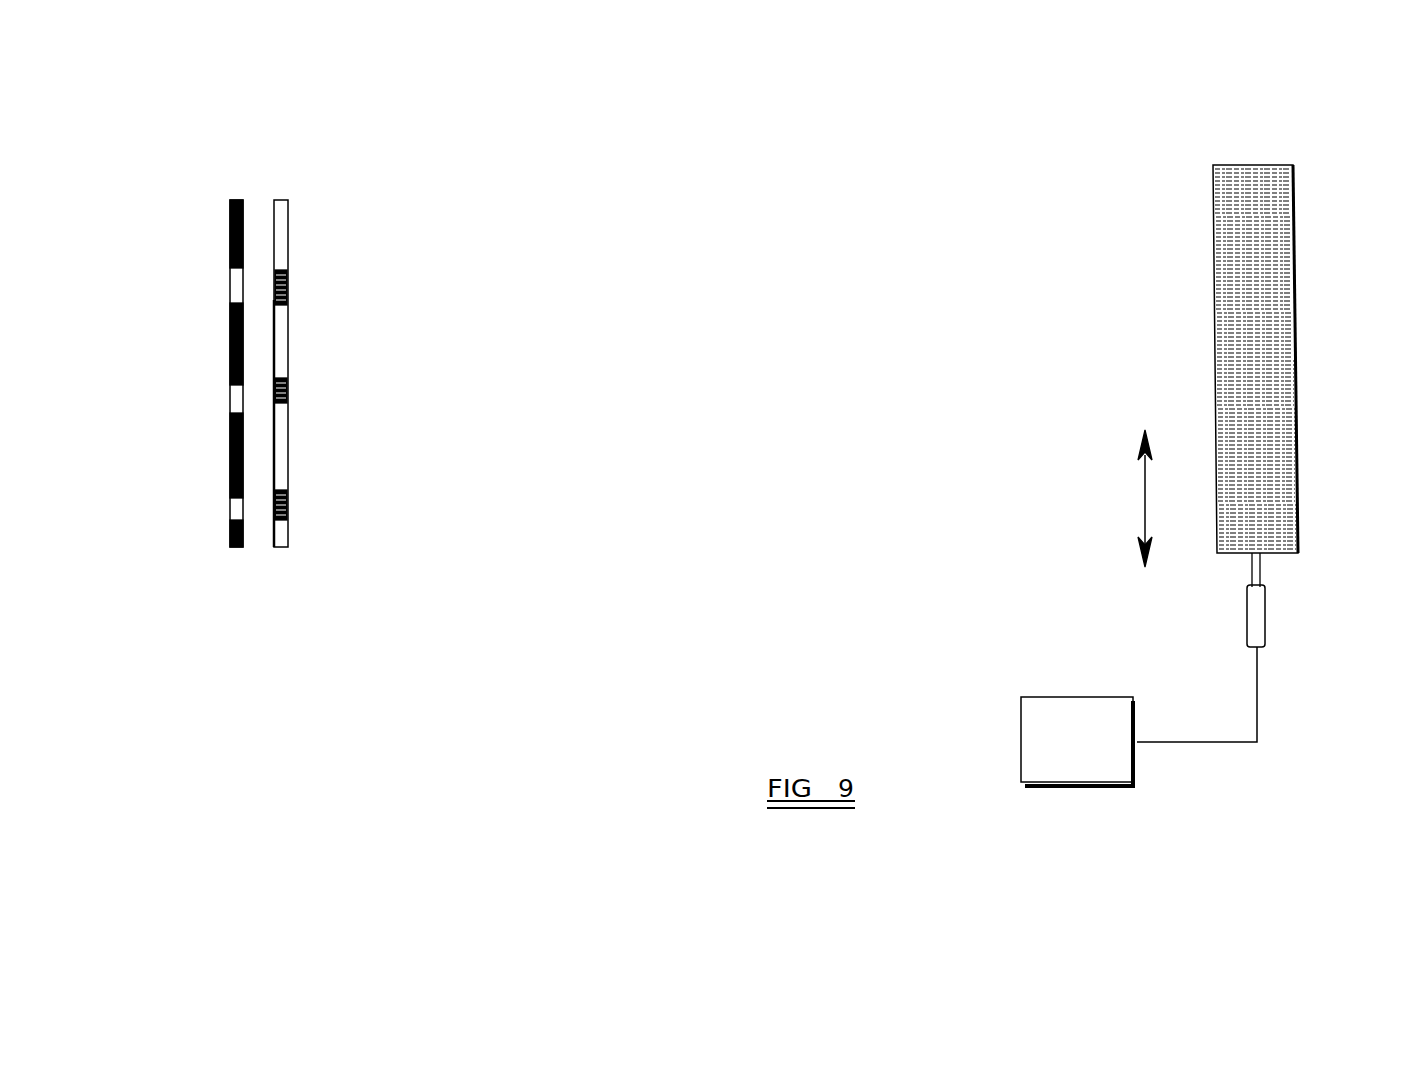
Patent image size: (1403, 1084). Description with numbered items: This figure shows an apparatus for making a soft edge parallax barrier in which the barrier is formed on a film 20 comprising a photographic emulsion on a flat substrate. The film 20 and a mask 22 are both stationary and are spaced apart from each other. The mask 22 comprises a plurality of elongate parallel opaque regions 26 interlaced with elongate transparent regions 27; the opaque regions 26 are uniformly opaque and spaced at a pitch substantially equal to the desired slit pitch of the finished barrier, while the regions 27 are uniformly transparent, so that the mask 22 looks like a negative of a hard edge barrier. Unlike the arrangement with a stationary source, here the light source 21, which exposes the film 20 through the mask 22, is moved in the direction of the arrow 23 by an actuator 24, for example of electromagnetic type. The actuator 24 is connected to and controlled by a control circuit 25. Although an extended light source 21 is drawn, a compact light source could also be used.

The film 20 is at (235, 200).
The light source 21 is at (1213, 238).
The mask 22 is at (285, 200).
The arrow 23 is at (1143, 500).
The actuator 24 is at (1263, 648).
The control circuit 25 is at (1020, 738).
The opaque regions 26 is at (287, 287).
The transparent regions 27 is at (280, 343).